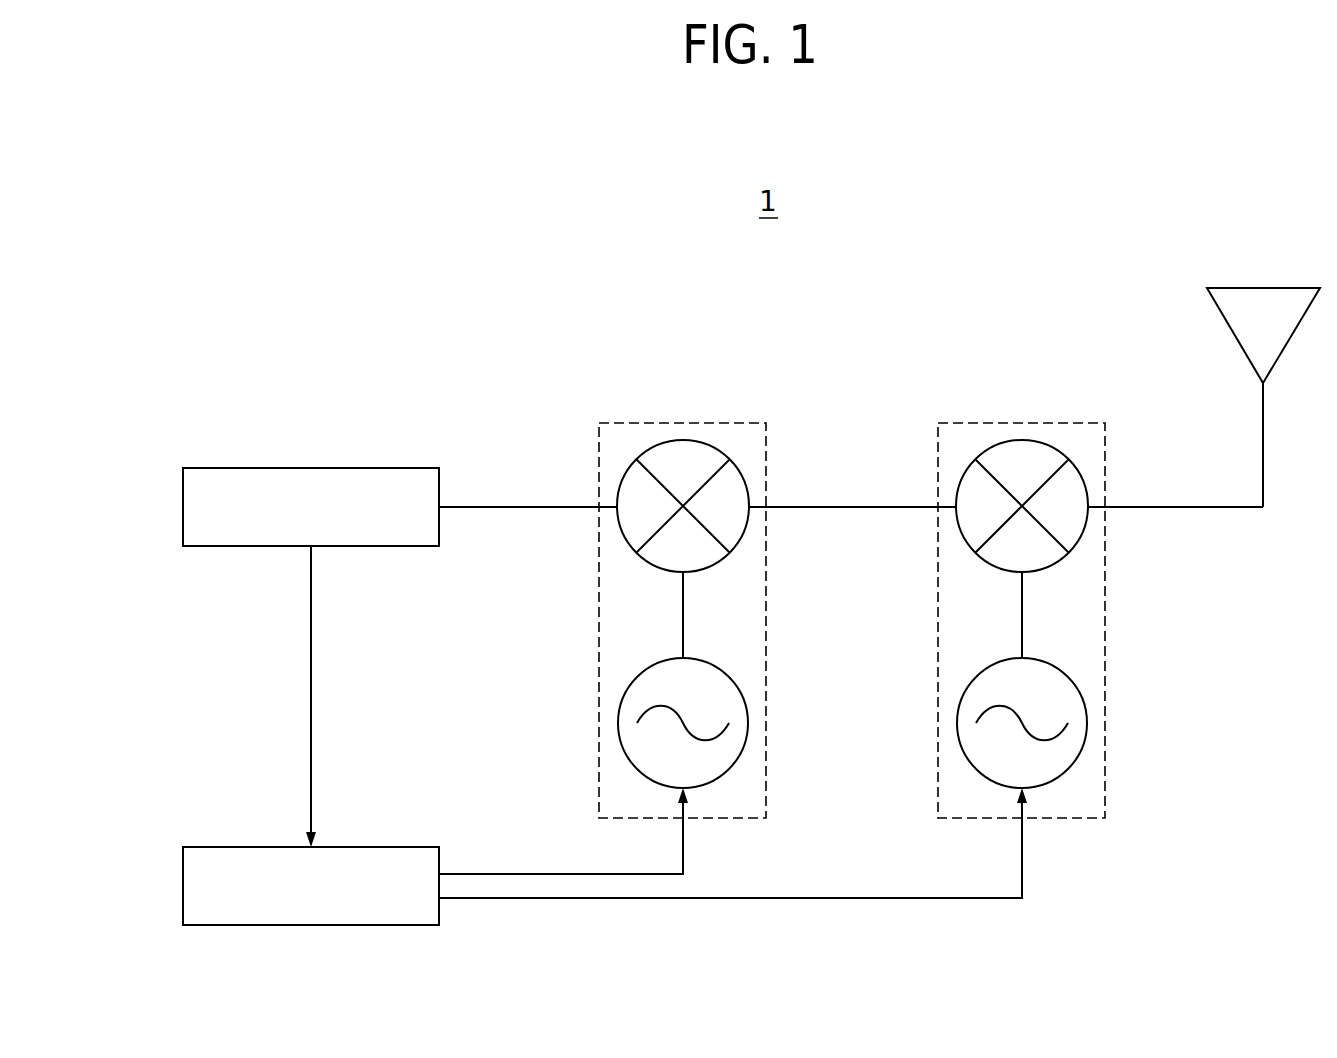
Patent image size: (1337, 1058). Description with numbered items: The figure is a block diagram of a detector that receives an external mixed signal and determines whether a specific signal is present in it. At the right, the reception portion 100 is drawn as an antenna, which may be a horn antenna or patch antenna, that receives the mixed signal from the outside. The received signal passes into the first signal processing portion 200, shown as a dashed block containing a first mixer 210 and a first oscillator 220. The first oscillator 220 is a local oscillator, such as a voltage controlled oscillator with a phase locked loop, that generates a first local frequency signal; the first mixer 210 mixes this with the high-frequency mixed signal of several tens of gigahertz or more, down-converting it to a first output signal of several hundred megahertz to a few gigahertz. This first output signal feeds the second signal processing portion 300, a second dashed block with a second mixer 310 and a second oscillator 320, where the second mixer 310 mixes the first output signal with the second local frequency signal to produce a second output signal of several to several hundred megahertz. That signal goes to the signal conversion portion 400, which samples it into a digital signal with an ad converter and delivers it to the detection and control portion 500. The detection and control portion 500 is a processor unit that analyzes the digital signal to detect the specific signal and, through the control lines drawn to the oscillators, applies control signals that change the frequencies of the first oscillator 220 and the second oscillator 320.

The reception portion 100 is at (1263, 288).
The first signal processing portion 200 is at (1024, 423).
The first mixer 210 is at (1083, 474).
The first oscillator 220 is at (1083, 690).
The second signal processing portion 300 is at (686, 423).
The second mixer 310 is at (744, 474).
The second oscillator 320 is at (744, 690).
The signal conversion portion 400 is at (396, 468).
The detection and control portion 500 is at (396, 847).